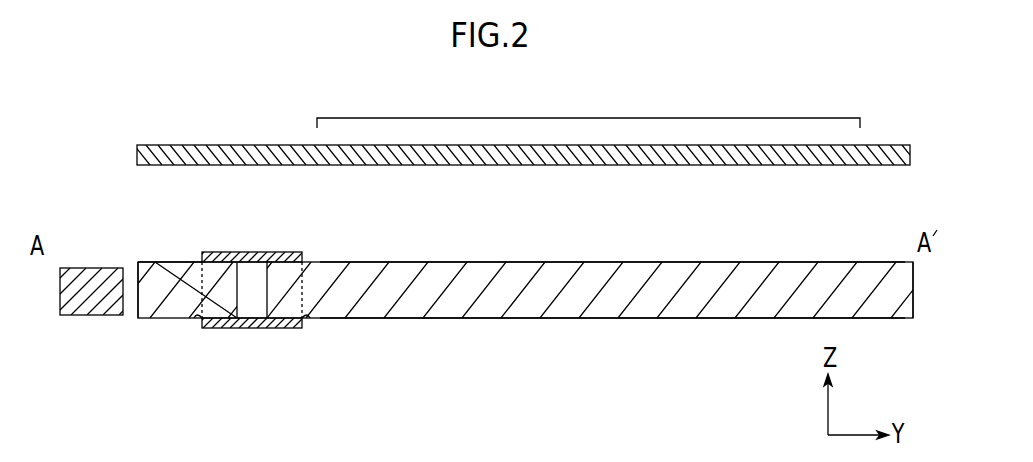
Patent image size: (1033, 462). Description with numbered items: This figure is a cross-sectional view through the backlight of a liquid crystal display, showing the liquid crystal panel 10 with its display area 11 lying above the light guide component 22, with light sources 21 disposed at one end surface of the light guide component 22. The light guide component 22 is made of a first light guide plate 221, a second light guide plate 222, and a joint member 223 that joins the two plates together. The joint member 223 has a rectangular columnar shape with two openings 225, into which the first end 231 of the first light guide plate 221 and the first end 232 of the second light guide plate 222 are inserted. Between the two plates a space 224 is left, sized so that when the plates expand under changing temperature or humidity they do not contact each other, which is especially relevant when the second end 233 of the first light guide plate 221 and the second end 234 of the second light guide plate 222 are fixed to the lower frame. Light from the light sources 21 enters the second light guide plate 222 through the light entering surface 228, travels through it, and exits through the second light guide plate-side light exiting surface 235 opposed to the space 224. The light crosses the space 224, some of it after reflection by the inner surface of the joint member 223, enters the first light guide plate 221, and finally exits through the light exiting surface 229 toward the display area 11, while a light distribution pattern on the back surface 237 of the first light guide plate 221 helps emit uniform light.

The liquid crystal panel 10 is at (230, 152).
The display area 11 is at (589, 118).
The light sources 21 is at (93, 290).
The light guide component 22 is at (519, 305).
The first light guide plate 221 is at (600, 300).
The second light guide plate 222 is at (175, 282).
The joint member 223 is at (270, 253).
The space 224 is at (252, 307).
The openings 225 is at (251, 361).
The light entering surface 228 is at (139, 293).
The light exiting surface 229 is at (715, 262).
The first end 231 is at (298, 287).
The first end 232 is at (230, 295).
The second end 233 is at (897, 287).
The second end 234 is at (152, 293).
The second light guide plate-side light exiting surface 235 is at (237, 274).
The back surface 237 is at (717, 318).